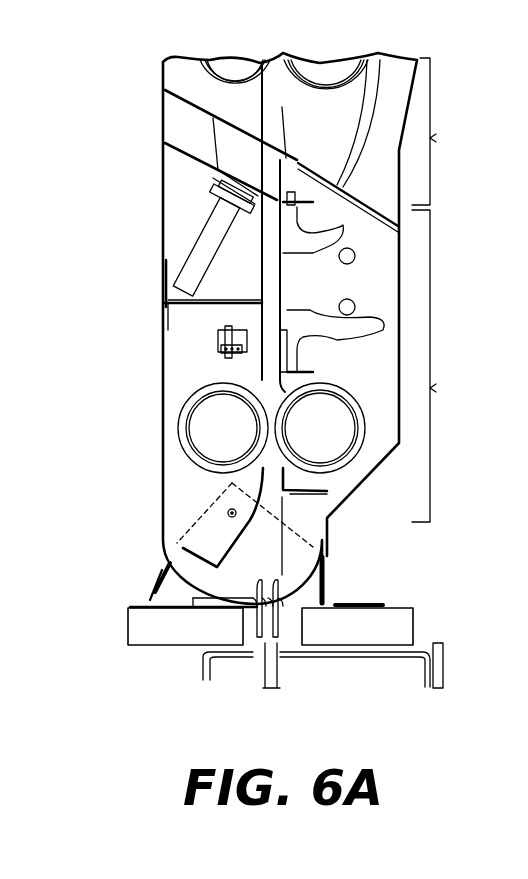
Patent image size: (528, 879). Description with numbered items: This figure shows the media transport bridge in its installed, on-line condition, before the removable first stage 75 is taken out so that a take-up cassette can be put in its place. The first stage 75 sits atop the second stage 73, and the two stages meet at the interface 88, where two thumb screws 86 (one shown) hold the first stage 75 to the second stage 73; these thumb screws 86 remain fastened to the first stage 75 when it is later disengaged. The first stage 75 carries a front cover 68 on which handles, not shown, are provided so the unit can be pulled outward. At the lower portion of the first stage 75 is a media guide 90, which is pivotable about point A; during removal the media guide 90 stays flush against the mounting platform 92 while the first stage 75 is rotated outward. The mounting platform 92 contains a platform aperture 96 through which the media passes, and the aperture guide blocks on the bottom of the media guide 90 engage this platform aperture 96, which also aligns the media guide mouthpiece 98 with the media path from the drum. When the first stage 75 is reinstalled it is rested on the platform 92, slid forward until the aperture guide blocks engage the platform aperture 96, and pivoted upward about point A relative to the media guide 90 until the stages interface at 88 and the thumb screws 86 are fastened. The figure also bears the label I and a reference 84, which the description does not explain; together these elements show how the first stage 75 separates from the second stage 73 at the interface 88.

The front cover 68 is at (163, 253).
The interface of the first and second stages 88 is at (198, 112).
The thumb screws 86 is at (220, 230).
The engine block 84 is at (163, 362).
The cylinder bore I is at (210, 430).
The point A is at (228, 513).
The media guide 90 is at (160, 578).
The mounting platform 92 is at (135, 607).
The media guide mouthpiece 98 is at (260, 640).
The platform aperture 96 is at (295, 640).
The second stage 73 is at (447, 131).
The first stage 75 is at (447, 366).